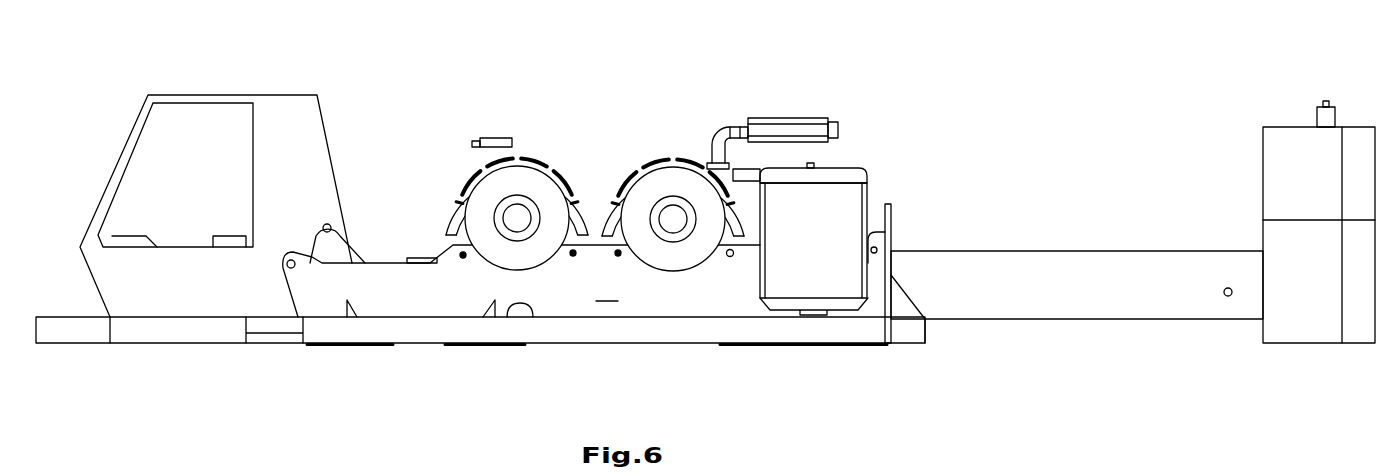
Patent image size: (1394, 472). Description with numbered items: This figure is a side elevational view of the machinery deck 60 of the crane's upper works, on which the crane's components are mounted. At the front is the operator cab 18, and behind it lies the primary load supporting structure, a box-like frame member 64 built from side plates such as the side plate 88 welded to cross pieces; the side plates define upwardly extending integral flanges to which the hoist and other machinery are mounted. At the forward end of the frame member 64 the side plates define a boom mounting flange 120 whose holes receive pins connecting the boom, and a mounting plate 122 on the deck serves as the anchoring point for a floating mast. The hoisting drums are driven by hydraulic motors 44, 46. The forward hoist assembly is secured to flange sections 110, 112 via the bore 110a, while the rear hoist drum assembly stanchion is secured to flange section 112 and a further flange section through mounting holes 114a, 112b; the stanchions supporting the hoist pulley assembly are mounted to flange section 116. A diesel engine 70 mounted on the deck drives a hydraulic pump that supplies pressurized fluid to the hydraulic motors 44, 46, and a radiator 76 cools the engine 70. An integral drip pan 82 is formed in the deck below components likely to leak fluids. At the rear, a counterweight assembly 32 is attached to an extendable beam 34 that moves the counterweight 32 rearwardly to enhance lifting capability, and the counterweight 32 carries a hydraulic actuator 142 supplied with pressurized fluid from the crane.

The operator cab 18 is at (293, 72).
The mounting plate 122 is at (328, 214).
The flange section 110 is at (450, 248).
The bore 110a is at (463, 259).
The boom mounting flange 120 is at (285, 262).
The frame member 64 is at (400, 298).
The drip pan 82 is at (533, 318).
The machinery deck 60 is at (665, 330).
The hydraulic motor 46 is at (520, 187).
The hydraulic motor 44 is at (660, 182).
The flange section 112 is at (598, 250).
The mounting hole 112b is at (573, 257).
The side plate 88 is at (607, 290).
The mounting hole 114a is at (731, 258).
The diesel engine 70 is at (793, 95).
The radiator 76 is at (791, 238).
The flange section 116 is at (878, 228).
The extendable beam 34 is at (1051, 304).
The counterweight assembly 32 is at (1365, 193).
The hydraulic actuator 142 is at (1315, 110).